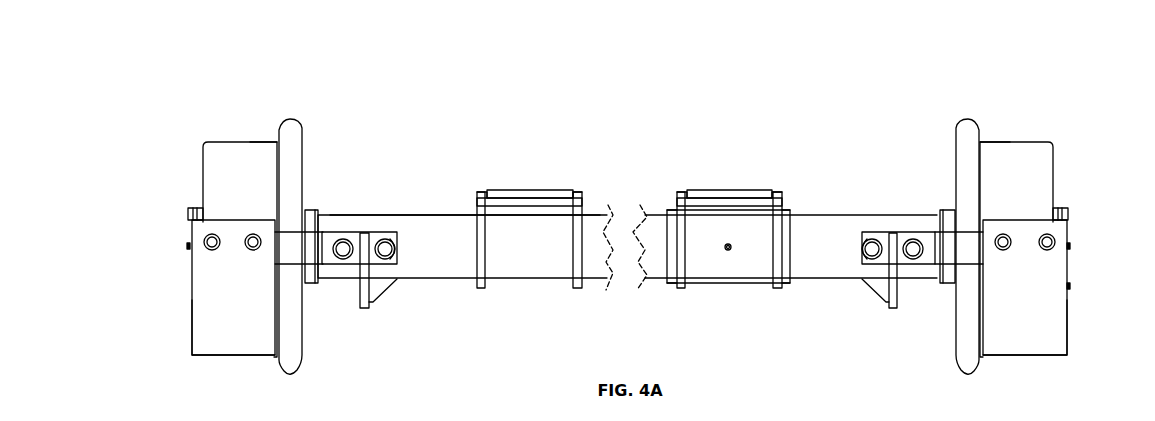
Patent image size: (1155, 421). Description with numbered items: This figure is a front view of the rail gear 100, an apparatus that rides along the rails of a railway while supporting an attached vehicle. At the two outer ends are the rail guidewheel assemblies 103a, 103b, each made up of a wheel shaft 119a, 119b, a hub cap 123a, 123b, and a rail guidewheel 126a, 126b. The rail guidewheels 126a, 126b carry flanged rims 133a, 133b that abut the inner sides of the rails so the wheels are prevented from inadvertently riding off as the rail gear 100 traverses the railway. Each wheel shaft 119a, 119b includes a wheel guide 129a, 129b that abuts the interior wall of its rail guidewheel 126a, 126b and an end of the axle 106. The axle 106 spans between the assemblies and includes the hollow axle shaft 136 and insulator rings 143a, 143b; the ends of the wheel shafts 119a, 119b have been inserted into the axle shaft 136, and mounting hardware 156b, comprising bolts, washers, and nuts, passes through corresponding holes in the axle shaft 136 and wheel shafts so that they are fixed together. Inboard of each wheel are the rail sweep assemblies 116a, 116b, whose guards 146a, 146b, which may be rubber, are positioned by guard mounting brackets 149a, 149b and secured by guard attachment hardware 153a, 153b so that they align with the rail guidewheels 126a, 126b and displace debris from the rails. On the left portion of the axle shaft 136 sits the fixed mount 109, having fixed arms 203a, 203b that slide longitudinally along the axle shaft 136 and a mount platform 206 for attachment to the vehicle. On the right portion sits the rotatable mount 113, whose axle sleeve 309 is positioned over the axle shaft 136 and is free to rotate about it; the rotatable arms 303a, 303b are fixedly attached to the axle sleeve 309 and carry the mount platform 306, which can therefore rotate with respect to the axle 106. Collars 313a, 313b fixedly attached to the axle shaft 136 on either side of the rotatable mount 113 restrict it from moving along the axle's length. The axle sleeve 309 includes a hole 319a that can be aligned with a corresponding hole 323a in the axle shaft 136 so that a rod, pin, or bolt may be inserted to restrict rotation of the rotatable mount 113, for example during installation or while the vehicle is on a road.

The rail gear 100 is at (667, 134).
The rail guidewheel assembly 103a is at (227, 142).
The rail guidewheel assembly 103b is at (1017, 142).
The axle 106 is at (458, 215).
The fixed mount 109 is at (567, 192).
The rotatable mount 113 is at (698, 192).
The rail sweep assembly 116a is at (220, 335).
The rail sweep assembly 116b is at (1023, 337).
The wheel shaft 119a is at (320, 218).
The wheel shaft 119b is at (940, 218).
The hub cap 123a is at (188, 214).
The hub cap 123b is at (1070, 214).
The rail guidewheel 126a is at (260, 203).
The rail guidewheel 126b is at (1036, 203).
The wheel guide 129a is at (312, 280).
The wheel guide 129b is at (947, 282).
The flanged rim 133a is at (292, 133).
The flanged rim 133b is at (968, 133).
The axle shaft 136 is at (458, 248).
The insulator ring 143a is at (322, 235).
The insulator ring 143b is at (913, 243).
The guard 146a is at (213, 300).
The guard 146b is at (1005, 300).
The guard mounting bracket 149a is at (363, 273).
The guard mounting bracket 149b is at (892, 272).
The guard attachment hardware 153a is at (253, 244).
The guard attachment hardware 153b is at (1003, 244).
The mounting hardware 156b is at (345, 247).
The fixed arm 203a is at (483, 275).
The fixed arm 203b is at (577, 275).
The mount platform 206 is at (510, 195).
The rotatable arm 303a is at (685, 275).
The rotatable arm 303b is at (777, 275).
The mount platform 306 is at (732, 193).
The axle sleeve 309 is at (712, 272).
The collar 313a is at (675, 272).
The collar 313b is at (790, 272).
The hole 319a is at (725, 247).
The hole 323a is at (731, 249).